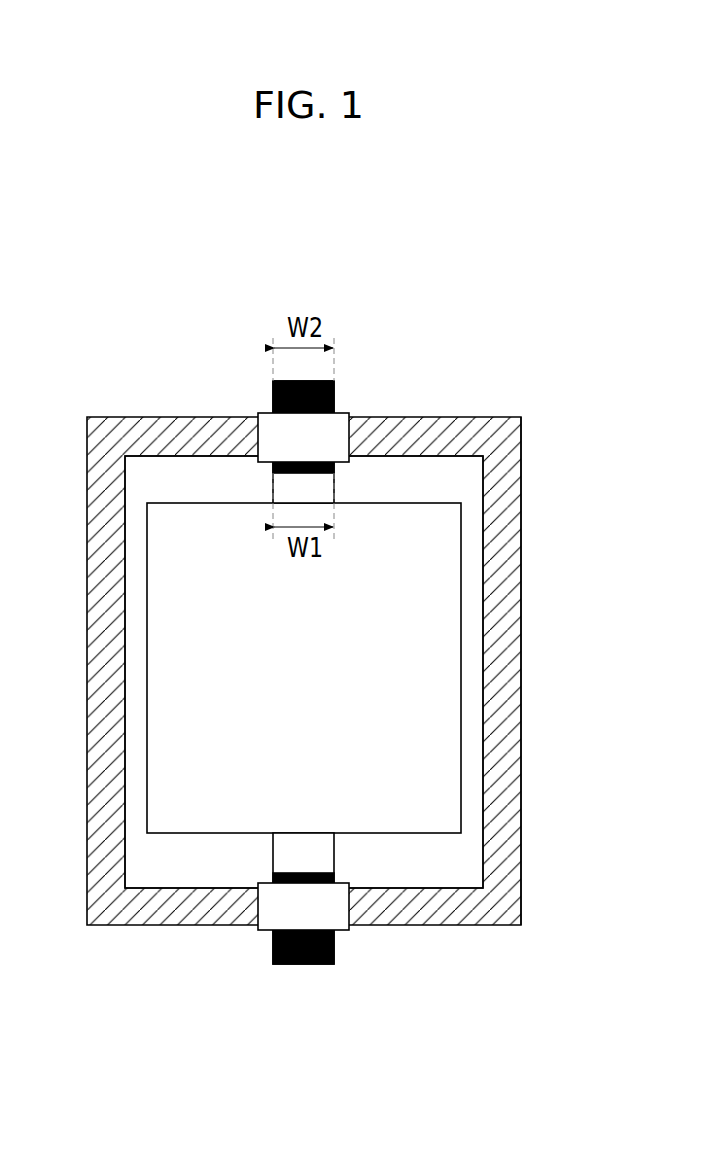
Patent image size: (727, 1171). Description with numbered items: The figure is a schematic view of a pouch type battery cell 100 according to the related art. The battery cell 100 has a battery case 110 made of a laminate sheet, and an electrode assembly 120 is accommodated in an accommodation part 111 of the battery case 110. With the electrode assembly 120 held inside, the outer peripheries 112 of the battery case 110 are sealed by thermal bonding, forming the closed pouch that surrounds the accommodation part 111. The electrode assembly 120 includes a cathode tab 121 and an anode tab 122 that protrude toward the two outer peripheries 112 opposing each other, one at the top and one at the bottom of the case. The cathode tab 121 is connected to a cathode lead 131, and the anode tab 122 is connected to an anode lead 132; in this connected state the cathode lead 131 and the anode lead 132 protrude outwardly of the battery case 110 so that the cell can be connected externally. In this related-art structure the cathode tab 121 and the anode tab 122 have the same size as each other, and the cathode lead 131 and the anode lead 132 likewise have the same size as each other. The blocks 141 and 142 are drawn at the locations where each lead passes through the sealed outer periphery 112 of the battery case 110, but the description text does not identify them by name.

The battery cell 100 is at (121, 308).
The battery case 110 is at (521, 537).
The accommodation part 111 is at (470, 713).
The outer peripheries 112 is at (505, 631).
The electrode assembly 120 is at (147, 713).
The cathode tab 121 is at (273, 489).
The anode tab 122 is at (273, 855).
The cathode lead 131 is at (336, 396).
The anode lead 132 is at (335, 947).
The first sealing member 141 is at (350, 442).
The second sealing member 142 is at (352, 900).